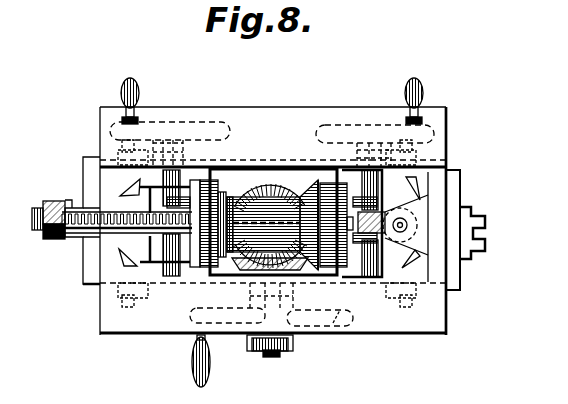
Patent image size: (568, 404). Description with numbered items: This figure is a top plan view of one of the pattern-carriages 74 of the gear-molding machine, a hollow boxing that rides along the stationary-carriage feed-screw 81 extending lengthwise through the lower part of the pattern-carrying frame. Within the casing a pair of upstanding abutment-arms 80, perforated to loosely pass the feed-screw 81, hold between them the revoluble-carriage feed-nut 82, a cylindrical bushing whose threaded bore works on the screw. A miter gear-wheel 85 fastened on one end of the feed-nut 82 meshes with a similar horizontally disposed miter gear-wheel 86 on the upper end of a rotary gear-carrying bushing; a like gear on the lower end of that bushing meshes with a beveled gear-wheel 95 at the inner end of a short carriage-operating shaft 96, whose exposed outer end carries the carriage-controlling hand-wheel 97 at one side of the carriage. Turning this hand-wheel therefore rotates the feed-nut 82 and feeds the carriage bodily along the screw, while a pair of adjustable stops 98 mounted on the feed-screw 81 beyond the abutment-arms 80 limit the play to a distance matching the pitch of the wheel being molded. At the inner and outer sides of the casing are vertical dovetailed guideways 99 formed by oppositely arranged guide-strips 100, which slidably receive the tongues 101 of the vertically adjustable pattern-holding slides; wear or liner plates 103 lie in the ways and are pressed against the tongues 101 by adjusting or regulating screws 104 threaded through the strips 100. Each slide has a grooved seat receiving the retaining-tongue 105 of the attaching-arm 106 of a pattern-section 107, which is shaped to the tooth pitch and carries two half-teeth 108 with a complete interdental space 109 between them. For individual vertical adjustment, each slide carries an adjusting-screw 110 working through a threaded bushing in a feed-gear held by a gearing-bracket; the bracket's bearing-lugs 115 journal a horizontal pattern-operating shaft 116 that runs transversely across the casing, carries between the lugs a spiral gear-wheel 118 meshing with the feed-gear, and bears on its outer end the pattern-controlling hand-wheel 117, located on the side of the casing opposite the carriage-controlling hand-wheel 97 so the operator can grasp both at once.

The pattern-carriage 74 is at (280, 210).
The abutment-arms 80 is at (200, 268).
The stationary-carriage feed-screw 81 is at (45, 208).
The revoluble-carriage feed-nut 82 is at (233, 197).
The miter gear-wheel 85 is at (305, 180).
The miter gear-wheel 86 is at (280, 183).
The beveled gear-wheel 95 is at (296, 322).
The carriage-operating shaft 96 is at (270, 356).
The carriage-controlling hand-wheel 97 is at (333, 325).
The adjustable stops 98 is at (57, 238).
The dovetailed guideways 99 is at (120, 195).
The guide-strips 100 is at (140, 163).
The tongues 101 is at (427, 200).
The wear or liner plates 103 is at (487, 288).
The adjusting or regulating screws 104 is at (432, 222).
The retaining-tongue 105 is at (467, 255).
The attaching-arm 106 is at (122, 263).
The pattern-section 107 is at (424, 207).
The half-teeth 108 is at (68, 200).
The interdental space 109 is at (78, 242).
The adjusting-screw 110 is at (405, 222).
The bearing-lugs 115 is at (182, 197).
The pattern-operating shaft 116 is at (192, 316).
The pattern-controlling hand-wheel 117 is at (185, 128).
The gear-wheel 118 is at (363, 250).